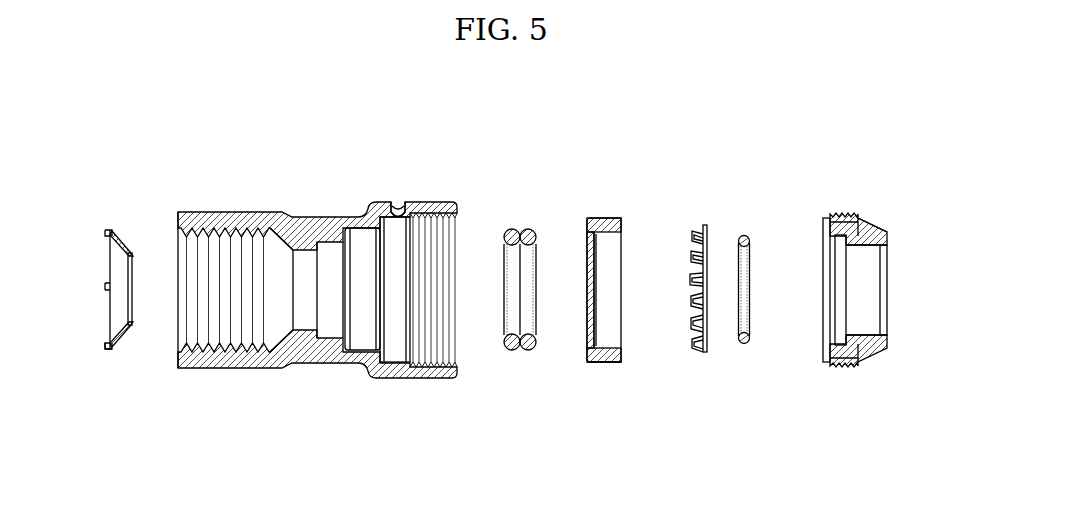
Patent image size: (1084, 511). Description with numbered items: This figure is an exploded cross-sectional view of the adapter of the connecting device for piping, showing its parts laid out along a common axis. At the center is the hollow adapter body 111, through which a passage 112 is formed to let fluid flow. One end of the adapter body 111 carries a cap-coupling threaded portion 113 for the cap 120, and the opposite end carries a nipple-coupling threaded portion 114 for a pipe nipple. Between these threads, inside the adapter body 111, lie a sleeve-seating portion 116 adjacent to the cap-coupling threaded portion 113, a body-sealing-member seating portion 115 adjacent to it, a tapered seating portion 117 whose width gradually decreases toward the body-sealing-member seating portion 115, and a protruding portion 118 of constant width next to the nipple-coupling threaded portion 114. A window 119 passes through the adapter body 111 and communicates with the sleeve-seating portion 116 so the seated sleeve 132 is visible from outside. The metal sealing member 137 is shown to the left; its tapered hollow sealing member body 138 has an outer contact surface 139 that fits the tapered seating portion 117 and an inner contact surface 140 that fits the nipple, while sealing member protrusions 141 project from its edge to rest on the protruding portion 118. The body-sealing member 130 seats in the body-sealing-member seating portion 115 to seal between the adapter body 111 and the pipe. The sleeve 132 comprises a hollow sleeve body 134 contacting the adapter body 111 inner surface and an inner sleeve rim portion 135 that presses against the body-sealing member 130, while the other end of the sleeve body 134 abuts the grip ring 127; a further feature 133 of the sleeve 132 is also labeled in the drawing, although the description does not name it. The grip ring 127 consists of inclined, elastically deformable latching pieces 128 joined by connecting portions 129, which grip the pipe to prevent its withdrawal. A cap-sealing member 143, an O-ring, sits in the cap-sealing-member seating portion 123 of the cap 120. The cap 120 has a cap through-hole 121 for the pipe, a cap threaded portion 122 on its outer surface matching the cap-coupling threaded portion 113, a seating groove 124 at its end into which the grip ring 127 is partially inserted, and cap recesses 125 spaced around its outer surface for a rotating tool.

The adapter body 111 is at (322, 287).
The passage 112 is at (309, 283).
The cap-coupling threaded portion 113 is at (438, 370).
The nipple-coupling threaded portion 114 is at (218, 361).
The body-sealing-member seating portion 115 is at (362, 247).
The sleeve-seating portion 116 is at (400, 348).
The tapered seating portion 117 is at (287, 260).
The protruding portion 118 is at (264, 356).
The window 119 is at (402, 216).
The cap 120 is at (864, 278).
The cap through-hole 121 is at (868, 303).
The cap threaded portion 122 is at (843, 201).
The cap-sealing-member seating portion 123 is at (840, 270).
The seating groove 124 is at (825, 361).
The cap recesses 125 is at (862, 221).
The grip ring 127 is at (700, 282).
The latching pieces 128 is at (693, 240).
The connecting portions 129 is at (704, 356).
The body-sealing member 130 is at (529, 229).
The sleeve 132 is at (599, 286).
The inner surface of spacer 133 is at (612, 308).
The sleeve body 134 is at (611, 369).
The inner sleeve rim portion 135 is at (586, 341).
The metal sealing member 137 is at (102, 213).
The sealing member body 138 is at (128, 237).
The outer contact surface 139 is at (120, 346).
The inner contact surface 140 is at (109, 332).
The sealing member protrusions 141 is at (105, 287).
The cap-sealing member 143 is at (746, 236).